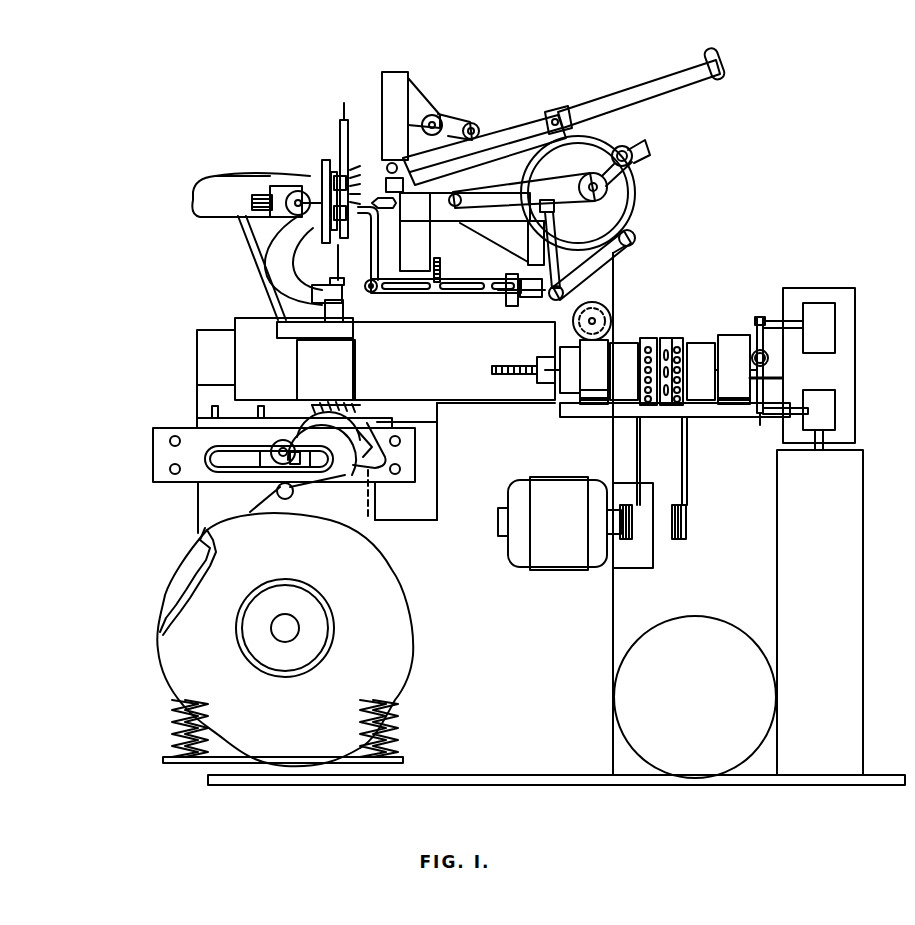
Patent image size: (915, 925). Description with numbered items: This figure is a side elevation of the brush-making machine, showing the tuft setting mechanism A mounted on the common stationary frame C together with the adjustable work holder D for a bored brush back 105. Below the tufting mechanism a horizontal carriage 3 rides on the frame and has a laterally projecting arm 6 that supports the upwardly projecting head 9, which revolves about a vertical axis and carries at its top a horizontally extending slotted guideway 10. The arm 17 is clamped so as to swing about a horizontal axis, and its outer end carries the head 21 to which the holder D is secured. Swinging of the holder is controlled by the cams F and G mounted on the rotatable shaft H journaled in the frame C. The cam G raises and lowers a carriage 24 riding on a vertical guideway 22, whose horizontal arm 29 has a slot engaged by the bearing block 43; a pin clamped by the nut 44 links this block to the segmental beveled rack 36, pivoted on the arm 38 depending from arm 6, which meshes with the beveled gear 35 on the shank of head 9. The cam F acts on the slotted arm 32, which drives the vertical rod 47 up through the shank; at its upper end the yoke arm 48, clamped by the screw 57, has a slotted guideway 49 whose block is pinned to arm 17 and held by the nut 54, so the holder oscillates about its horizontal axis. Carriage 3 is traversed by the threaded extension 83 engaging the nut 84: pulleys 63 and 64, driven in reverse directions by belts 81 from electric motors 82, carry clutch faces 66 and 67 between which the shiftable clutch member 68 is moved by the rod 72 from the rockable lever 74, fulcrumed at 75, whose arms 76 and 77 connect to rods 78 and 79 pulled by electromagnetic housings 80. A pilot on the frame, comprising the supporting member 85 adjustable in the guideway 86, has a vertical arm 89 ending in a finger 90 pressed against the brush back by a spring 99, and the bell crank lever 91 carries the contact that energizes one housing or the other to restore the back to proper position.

The carriage 3 is at (252, 322).
The laterally projecting arm 6 is at (347, 355).
The head 9 is at (255, 228).
The slotted guideway 10 is at (271, 183).
The arm 17 is at (208, 205).
The head 21 is at (322, 185).
The vertical guideway 22 is at (240, 425).
The carriage 24 is at (205, 425).
The arm 29 is at (205, 447).
The arm 32 is at (345, 472).
The beveled gear wheel 35 is at (312, 403).
The segmental beveled rack 36 is at (345, 425).
The arm 38 is at (378, 422).
The bearing block 43 is at (268, 458).
The clamping nut 44 is at (283, 455).
The rod 47 is at (340, 313).
The yoke arm 48 is at (285, 292).
The slotted guideway 49 is at (285, 198).
The clamping nut 54 is at (292, 212).
The screw 57 is at (340, 282).
The pulley 63 is at (632, 350).
The pulley 64 is at (700, 350).
The clutch face 66 is at (650, 350).
The clutch face 67 is at (690, 350).
The shiftable clutch member 68 is at (675, 350).
The rod 72 is at (752, 395).
The rockable lever 74 is at (770, 376).
The fulcrum 75 is at (768, 362).
The arm 76 is at (760, 316).
The arm 77 is at (759, 420).
The rod 78 is at (798, 328).
The rod 79 is at (797, 412).
The housing 80 is at (825, 328).
The belt 81 is at (682, 420).
The electric motor 82 is at (568, 500).
The screw-threaded extension 83 is at (500, 368).
The nut 84 is at (541, 360).
The supporting member 85 is at (508, 288).
The guideway 86 is at (534, 292).
The vertically extending arm 89 is at (375, 262).
The finger 90 is at (362, 205).
The bell crank lever 91 is at (513, 294).
The spring 99 is at (437, 280).
The brush back 105 is at (344, 118).
The tuft setting mechanism A is at (384, 214).
The frame C is at (600, 603).
The work holder D is at (326, 155).
The cam F is at (405, 577).
The cam G is at (188, 572).
The rotatable shaft H is at (290, 627).